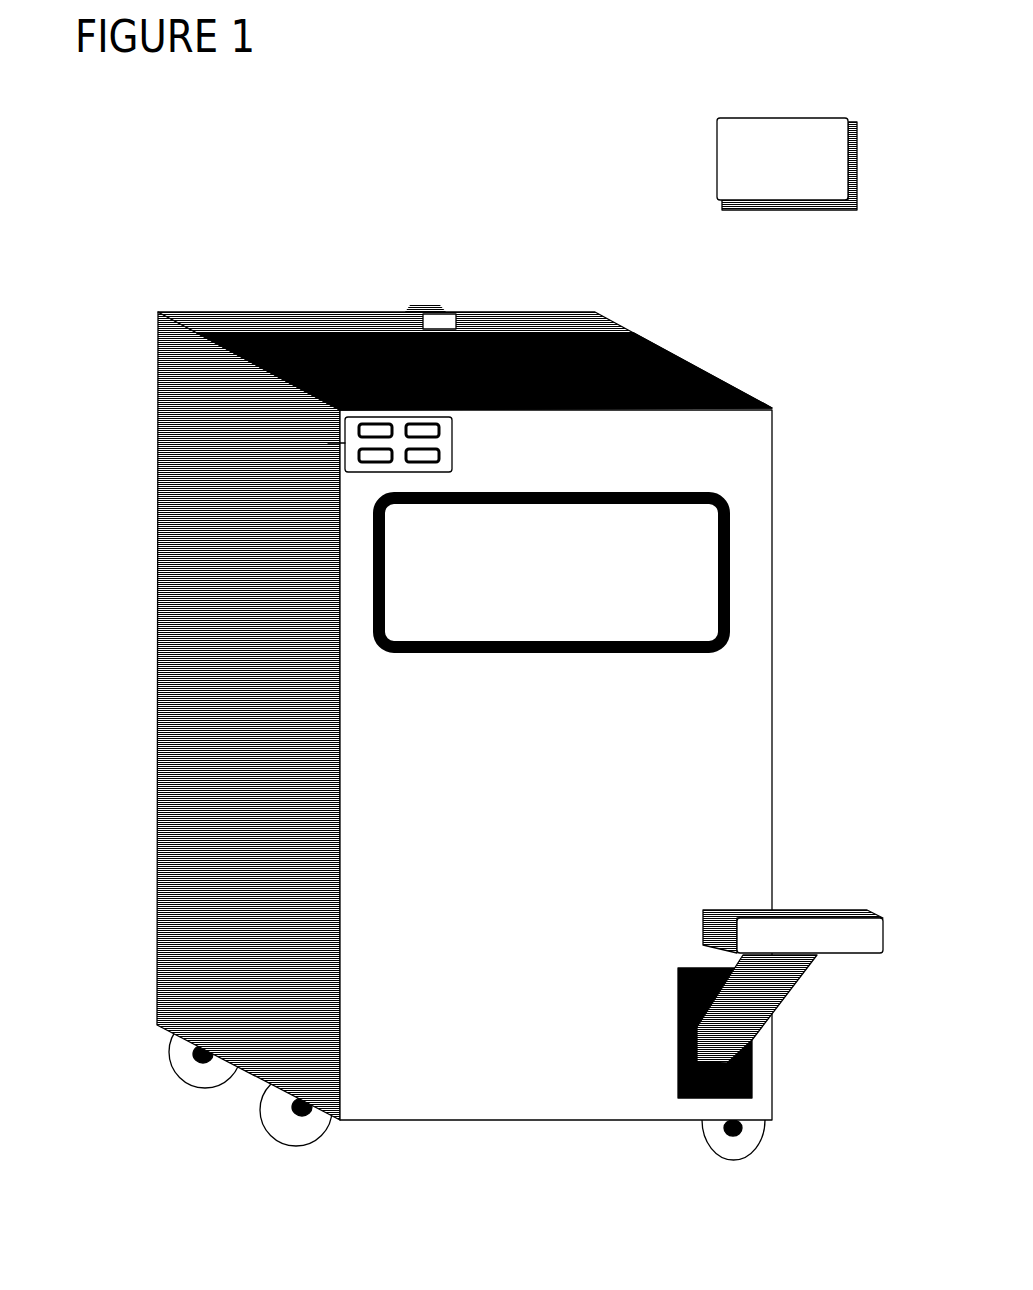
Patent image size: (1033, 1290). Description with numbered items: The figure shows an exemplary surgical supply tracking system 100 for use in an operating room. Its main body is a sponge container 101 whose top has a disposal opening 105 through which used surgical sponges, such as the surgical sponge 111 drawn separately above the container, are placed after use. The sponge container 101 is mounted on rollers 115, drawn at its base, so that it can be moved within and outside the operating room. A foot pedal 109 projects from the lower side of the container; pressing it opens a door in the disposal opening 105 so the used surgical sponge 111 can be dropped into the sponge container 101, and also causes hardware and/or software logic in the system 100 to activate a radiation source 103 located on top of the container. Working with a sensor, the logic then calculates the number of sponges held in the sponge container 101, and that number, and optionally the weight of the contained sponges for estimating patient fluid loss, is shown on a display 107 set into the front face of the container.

The surgical supply tracking system 100 is at (527, 325).
The sponge container 101 is at (268, 312).
The radiation source 103 is at (420, 308).
The disposal opening 105 is at (697, 367).
The display 107 is at (625, 548).
The foot pedal 109 is at (803, 908).
The surgical sponge 111 is at (787, 208).
The rollers 115 is at (315, 1140).